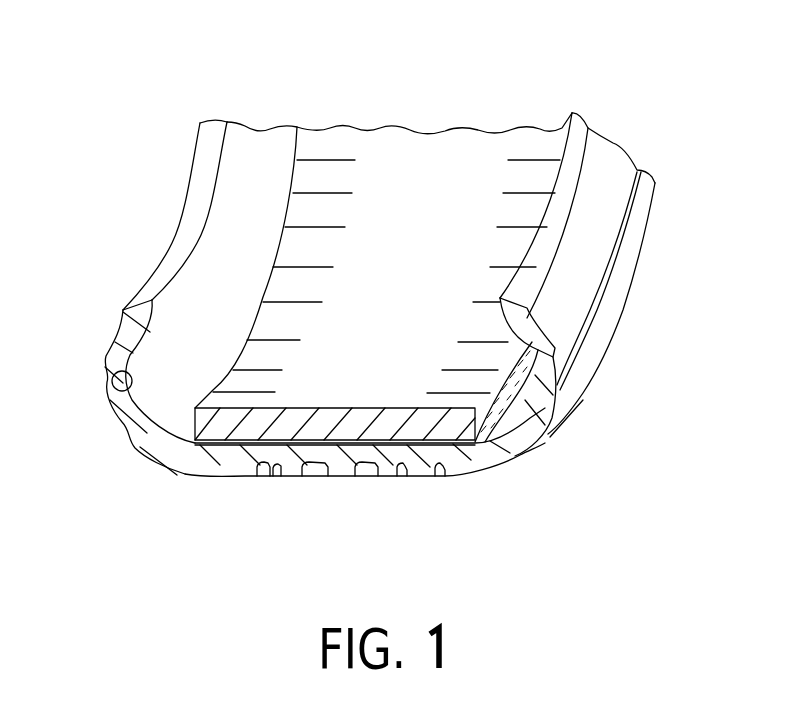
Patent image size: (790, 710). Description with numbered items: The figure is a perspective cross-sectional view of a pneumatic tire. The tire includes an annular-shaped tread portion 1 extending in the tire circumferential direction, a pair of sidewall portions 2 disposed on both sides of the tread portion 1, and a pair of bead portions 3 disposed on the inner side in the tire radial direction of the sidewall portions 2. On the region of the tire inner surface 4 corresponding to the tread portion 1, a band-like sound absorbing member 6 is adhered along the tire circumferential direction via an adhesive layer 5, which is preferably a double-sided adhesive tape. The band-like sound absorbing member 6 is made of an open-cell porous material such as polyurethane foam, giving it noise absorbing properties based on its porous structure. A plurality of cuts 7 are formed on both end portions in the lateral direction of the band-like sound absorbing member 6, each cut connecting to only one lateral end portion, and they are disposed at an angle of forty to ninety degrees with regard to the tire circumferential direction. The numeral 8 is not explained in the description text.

The tread portion 1 is at (462, 477).
The sidewall portions 2 is at (108, 407).
The bead portions 3 is at (540, 308).
The tire inner surface 4 is at (112, 375).
The adhesive layer 5 is at (337, 444).
The band-like sound absorbing member 6 is at (427, 172).
The cuts 7 is at (317, 193).
The inner liner 8 is at (215, 283).